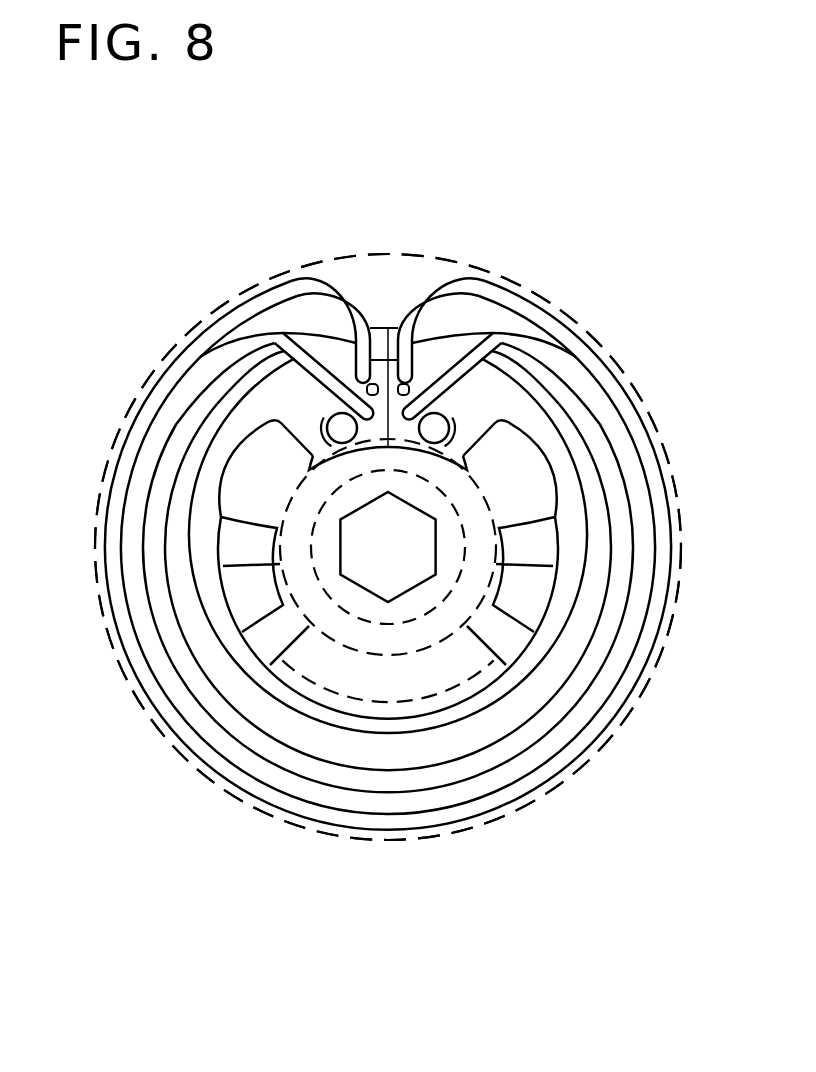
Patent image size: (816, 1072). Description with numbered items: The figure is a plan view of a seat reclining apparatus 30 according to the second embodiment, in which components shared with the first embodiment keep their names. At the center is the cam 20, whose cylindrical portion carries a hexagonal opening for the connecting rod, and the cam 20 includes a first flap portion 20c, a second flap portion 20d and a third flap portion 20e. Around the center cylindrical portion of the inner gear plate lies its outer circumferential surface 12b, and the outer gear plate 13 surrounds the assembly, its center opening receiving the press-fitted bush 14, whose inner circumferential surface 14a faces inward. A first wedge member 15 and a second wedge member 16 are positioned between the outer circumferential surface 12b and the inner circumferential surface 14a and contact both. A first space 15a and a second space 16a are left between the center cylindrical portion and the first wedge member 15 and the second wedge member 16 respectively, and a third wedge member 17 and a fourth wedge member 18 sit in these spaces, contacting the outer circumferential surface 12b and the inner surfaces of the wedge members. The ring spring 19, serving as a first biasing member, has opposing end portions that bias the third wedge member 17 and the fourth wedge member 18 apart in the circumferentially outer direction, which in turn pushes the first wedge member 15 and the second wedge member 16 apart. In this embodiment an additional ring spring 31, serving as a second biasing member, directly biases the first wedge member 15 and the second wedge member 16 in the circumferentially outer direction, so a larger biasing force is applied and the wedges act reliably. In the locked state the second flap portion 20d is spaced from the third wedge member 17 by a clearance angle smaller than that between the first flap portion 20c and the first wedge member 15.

The outer circumferential surface 12b is at (395, 348).
The outer gear plate 13 is at (433, 270).
The bush 14 is at (380, 348).
The inner circumferential surface 14a is at (369, 352).
The first wedge member 15 is at (237, 550).
The first space 15a is at (318, 430).
The second wedge member 16 is at (555, 555).
The second space 16a is at (458, 430).
The third wedge member 17 is at (338, 414).
The fourth wedge member 18 is at (438, 413).
The ring spring 19 is at (288, 752).
The cam 20 is at (466, 592).
The first flap portion 20c is at (383, 688).
The second flap portion 20d is at (260, 478).
The third flap portion 20e is at (505, 478).
The seat reclining apparatus 30 is at (184, 790).
The ring spring 31 is at (645, 432).